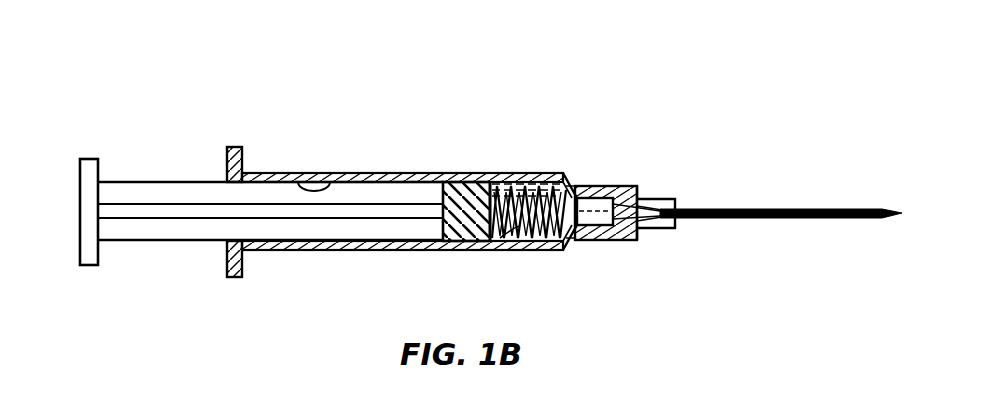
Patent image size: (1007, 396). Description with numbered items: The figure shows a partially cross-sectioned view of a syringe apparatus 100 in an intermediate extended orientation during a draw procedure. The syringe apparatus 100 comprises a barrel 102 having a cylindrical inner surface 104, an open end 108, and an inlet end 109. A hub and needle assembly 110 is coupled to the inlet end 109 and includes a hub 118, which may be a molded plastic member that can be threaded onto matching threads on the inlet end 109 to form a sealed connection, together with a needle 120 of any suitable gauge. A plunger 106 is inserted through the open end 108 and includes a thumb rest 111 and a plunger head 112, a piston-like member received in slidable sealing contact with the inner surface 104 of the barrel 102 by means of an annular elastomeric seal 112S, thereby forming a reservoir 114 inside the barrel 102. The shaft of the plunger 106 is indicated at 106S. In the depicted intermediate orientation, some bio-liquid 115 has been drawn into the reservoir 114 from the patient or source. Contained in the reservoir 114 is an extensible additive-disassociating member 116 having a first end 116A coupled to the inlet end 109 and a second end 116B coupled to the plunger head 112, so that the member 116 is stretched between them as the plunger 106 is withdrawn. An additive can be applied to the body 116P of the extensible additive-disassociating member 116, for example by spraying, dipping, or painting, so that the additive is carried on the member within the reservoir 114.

The syringe apparatus 100 is at (335, 66).
The barrel 102 is at (378, 218).
The inner surface 104 is at (291, 173).
The plunger 106 is at (270, 212).
The plunger rod shaft 106S is at (142, 242).
The open end 108 is at (221, 249).
The inlet end 109 is at (604, 249).
The hub and needle assembly 110 is at (704, 210).
The thumb rest 111 is at (80, 188).
The plunger head 112 is at (435, 239).
The seal 112S is at (486, 240).
The reservoir 114 is at (541, 178).
The bio-liquid 115 is at (555, 168).
The extensible additive-disassociating member 116 is at (533, 209).
The first end 116A is at (577, 227).
The second end 116B is at (492, 188).
The body 116P is at (521, 229).
The hub 118 is at (600, 188).
The needle 120 is at (808, 208).